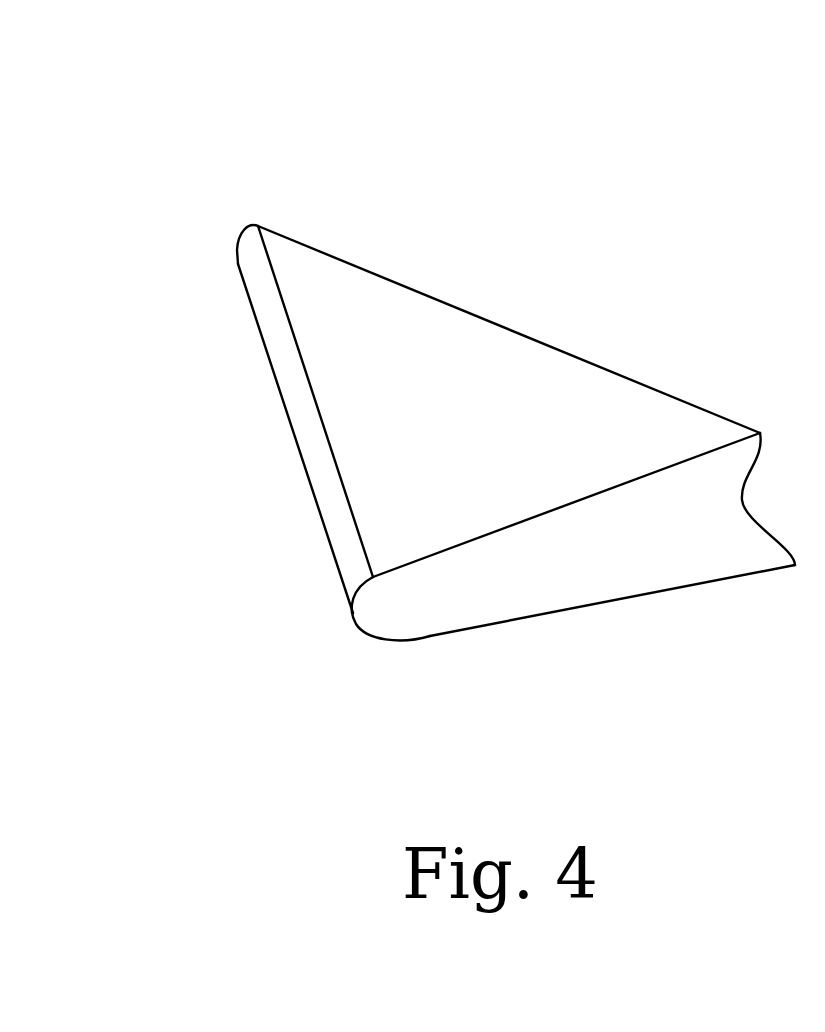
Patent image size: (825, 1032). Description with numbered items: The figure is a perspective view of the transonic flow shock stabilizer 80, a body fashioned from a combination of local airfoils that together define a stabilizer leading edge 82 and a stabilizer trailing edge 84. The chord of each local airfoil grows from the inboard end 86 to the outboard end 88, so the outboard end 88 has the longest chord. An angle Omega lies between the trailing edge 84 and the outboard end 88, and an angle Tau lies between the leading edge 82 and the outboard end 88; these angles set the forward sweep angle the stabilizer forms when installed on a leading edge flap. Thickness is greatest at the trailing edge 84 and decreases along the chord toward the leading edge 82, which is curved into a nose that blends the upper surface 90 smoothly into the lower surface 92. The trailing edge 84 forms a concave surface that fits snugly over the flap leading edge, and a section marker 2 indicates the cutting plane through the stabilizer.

The transonic flow shock stabilizer 80 is at (543, 140).
The stabilizer leading edge 82 is at (294, 444).
The stabilizer trailing edge 84 is at (616, 372).
The inboard end 86 is at (258, 226).
The outboard end 88 is at (430, 605).
The upper surface 90 is at (418, 378).
The lower surface 92 is at (506, 603).
The section line 2 is at (447, 557).